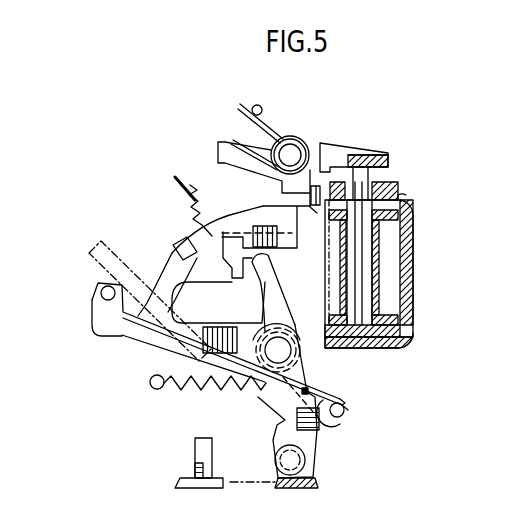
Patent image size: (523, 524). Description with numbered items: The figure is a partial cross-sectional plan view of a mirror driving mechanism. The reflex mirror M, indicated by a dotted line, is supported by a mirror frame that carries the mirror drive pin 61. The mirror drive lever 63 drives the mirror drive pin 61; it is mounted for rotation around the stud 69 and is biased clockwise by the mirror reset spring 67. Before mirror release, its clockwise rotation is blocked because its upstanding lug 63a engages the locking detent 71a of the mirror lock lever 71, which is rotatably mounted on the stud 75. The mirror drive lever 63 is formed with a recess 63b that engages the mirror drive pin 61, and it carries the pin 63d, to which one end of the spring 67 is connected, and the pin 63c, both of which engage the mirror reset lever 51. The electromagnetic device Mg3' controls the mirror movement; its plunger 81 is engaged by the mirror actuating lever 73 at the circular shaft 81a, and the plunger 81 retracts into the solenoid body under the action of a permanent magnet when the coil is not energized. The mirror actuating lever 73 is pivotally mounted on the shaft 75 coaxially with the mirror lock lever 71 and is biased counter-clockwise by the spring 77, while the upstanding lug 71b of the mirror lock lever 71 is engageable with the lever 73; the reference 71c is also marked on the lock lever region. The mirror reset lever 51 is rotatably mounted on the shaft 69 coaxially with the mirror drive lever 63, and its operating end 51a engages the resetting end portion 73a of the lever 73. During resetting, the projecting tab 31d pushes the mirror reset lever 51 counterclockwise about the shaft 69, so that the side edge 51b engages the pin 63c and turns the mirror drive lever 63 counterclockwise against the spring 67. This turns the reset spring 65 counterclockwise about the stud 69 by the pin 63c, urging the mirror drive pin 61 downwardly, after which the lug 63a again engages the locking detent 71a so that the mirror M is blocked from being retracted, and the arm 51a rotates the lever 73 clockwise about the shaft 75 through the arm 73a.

The electromagnetic device Mg3' is at (402, 265).
The plunger 81 is at (380, 155).
The circular shaft 81a is at (372, 180).
The mirror actuating lever 73 is at (325, 143).
The resetting end portion 73a is at (218, 317).
The stud 75 is at (300, 142).
The spring 77 is at (277, 127).
The mirror lock lever 71 is at (235, 217).
The locking detent 71a is at (183, 222).
The upstanding lug 71b is at (311, 195).
The lever spring 71c is at (188, 180).
The upstanding lug 63a is at (175, 243).
The reflex mirror M is at (106, 243).
The mirror drive pin 61 is at (100, 286).
The recess 63b is at (93, 304).
The mirror drive lever 63 is at (100, 336).
The reset spring 65 is at (133, 330).
The mirror reset spring 67 is at (176, 390).
The stud 69 is at (283, 353).
The operating end 51a is at (283, 293).
The mirror reset lever 51 is at (313, 473).
The side edge 51b is at (323, 422).
The pin 63c is at (345, 409).
The pin 63d is at (330, 387).
The projecting tab 31d is at (188, 478).